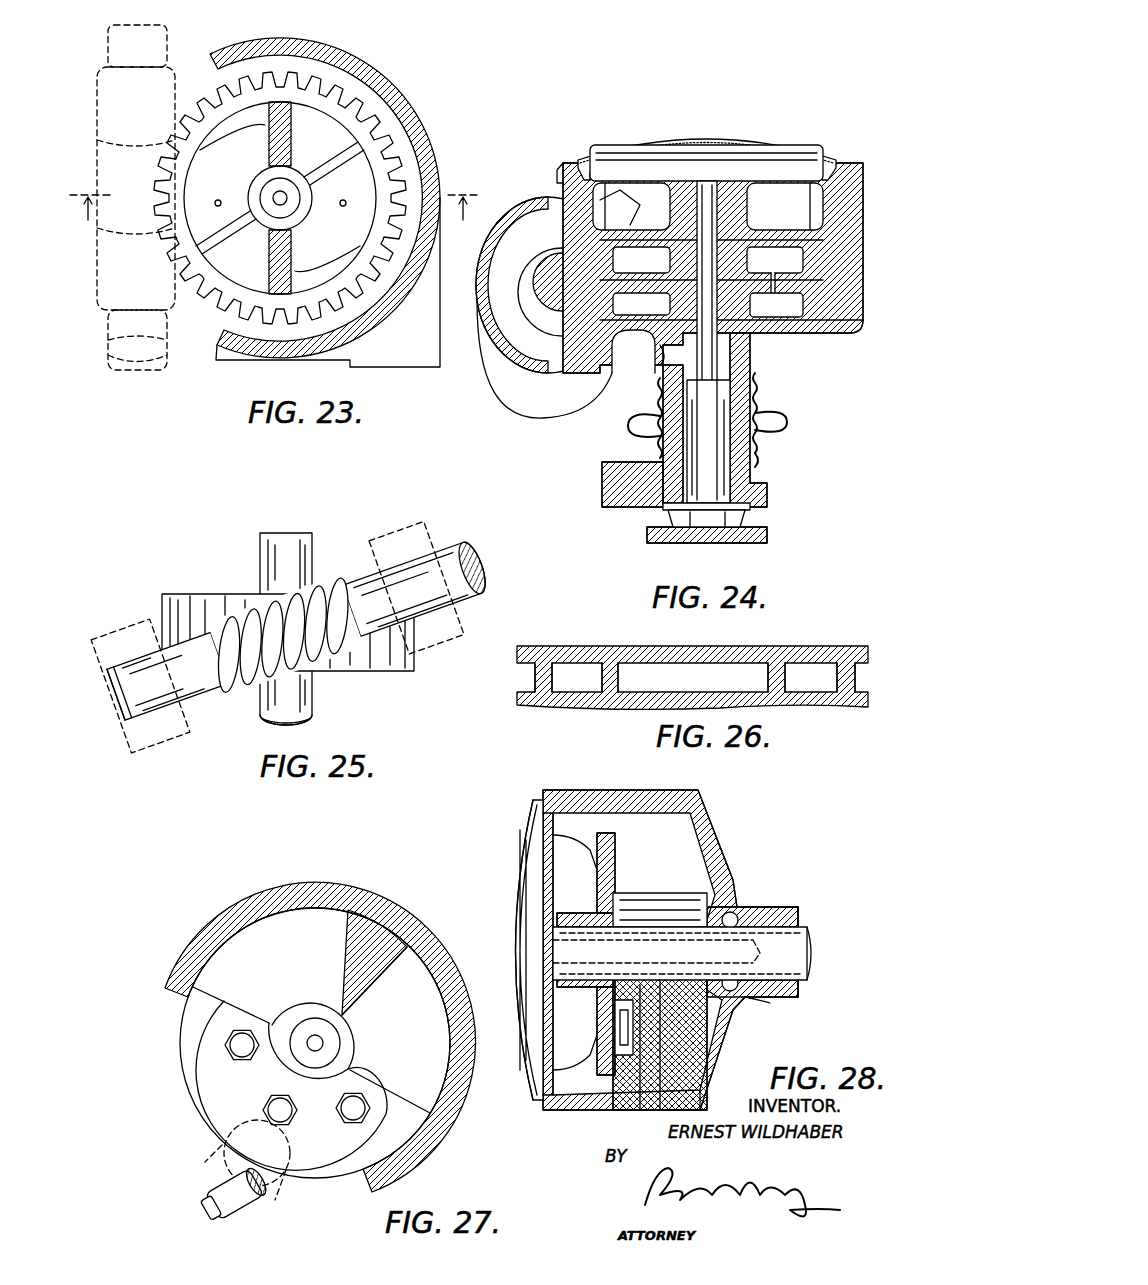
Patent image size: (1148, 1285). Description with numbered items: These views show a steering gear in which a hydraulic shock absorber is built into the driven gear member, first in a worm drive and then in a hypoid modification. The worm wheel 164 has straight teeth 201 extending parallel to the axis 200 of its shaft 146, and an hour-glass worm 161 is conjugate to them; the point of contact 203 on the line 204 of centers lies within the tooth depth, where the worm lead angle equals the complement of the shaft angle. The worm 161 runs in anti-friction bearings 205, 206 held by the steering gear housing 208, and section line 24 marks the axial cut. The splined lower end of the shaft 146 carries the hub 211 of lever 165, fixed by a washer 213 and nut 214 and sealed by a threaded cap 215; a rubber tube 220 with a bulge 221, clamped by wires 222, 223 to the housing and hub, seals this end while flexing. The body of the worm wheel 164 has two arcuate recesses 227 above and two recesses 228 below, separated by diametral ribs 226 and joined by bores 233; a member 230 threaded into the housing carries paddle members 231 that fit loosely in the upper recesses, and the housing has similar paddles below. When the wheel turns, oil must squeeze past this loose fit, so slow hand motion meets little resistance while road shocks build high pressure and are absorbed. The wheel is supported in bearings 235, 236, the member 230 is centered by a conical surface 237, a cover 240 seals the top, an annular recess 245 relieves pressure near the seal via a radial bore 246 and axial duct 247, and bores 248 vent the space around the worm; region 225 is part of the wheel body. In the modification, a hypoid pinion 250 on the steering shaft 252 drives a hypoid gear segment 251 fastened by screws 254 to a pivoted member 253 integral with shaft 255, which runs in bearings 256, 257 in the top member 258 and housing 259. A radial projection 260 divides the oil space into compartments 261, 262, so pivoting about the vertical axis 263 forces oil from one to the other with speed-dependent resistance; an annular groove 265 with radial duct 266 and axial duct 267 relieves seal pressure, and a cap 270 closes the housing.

In FIG. 23, the section line 24- 24 is at (275, 222).
In FIG. 23, the bearing pin shaft 146 is at (284, 190).
In FIG. 24, the bearing pin shaft 146 is at (722, 393).
In FIG. 23, the hour-glass worm 161 is at (112, 178).
In FIG. 24, the hour-glass worm 161 is at (545, 268).
In FIG. 25, the hour-glass worm 161 is at (367, 552).
In FIG. 23, the worm wheel 164 is at (368, 150).
In FIG. 24, the worm wheel 164 is at (795, 325).
In FIG. 25, the worm wheel 164 is at (210, 602).
In FIG. 24, the lever 165 is at (630, 493).
In FIG. 23, the axis 200 is at (278, 199).
In FIG. 23, the straight teeth 201 is at (380, 160).
In FIG. 25, the straight teeth 201 is at (367, 677).
In FIG. 24, the point of contact 203 is at (587, 277).
In FIG. 24, the line of centers 204 is at (641, 260).
In FIG. 25, the anti-friction bearing 205 is at (127, 623).
In FIG. 25, the anti-friction bearing 206 is at (415, 521).
In FIG. 24, the steering gear housing 208 is at (838, 332).
In FIG. 24, the hub 211 is at (745, 487).
In FIG. 24, the washer 213 is at (742, 515).
In FIG. 24, the nut 214 is at (690, 520).
In FIG. 24, the threaded cap 215 is at (760, 540).
In FIG. 24, the tube 220 is at (760, 453).
In FIG. 24, the bulge 221 is at (788, 422).
In FIG. 24, the wire 222 is at (758, 407).
In FIG. 24, the wire 223 is at (655, 432).
In FIG. 24, the recess 225 is at (677, 302).
In FIG. 23, the diametral ribs 226 is at (210, 243).
In FIG. 26, the diametral ribs 226 is at (537, 678).
In FIG. 23, the arcuate recesses 227 is at (280, 197).
In FIG. 24, the arcuate recesses 227 is at (652, 215).
In FIG. 24, the arcuate recesses 228 is at (772, 312).
In FIG. 24, the member 230 is at (590, 206).
In FIG. 26, the member 230 is at (810, 655).
In FIG. 23, the paddle members 231 is at (272, 130).
In FIG. 26, the paddle members 231 is at (617, 684).
In FIG. 23, the bores 233 is at (220, 201).
In FIG. 24, the bores 233 is at (775, 270).
In FIG. 24, the bearing 235 is at (668, 398).
In FIG. 24, the bearing 236 is at (679, 190).
In FIG. 24, the conical surface 237 is at (560, 178).
In FIG. 24, the cover 240 is at (765, 143).
In FIG. 24, the annular recess 245 is at (672, 362).
In FIG. 24, the radial bore 246 is at (668, 352).
In FIG. 24, the axial duct 247 is at (714, 217).
In FIG. 24, the bores 248 is at (622, 250).
In FIG. 27, the hypoid pinion 250 is at (225, 1163).
In FIG. 27, the hypoid gear segment 251 is at (330, 1167).
In FIG. 28, the hypoid gear segment 251 is at (683, 1053).
In FIG. 27, the steering shaft 252 is at (267, 1207).
In FIG. 27, the pivoted member 253 is at (405, 1019).
In FIG. 28, the pivoted member 253 is at (637, 1080).
In FIG. 27, the screws 254 is at (357, 1103).
In FIG. 28, the screws 254 is at (620, 1027).
In FIG. 28, the shaft 255 is at (793, 960).
In FIG. 28, the bearing 256 is at (572, 913).
In FIG. 28, the bearing 257 is at (782, 907).
In FIG. 28, the top member 258 is at (613, 880).
In FIG. 27, the housing 259 is at (402, 926).
In FIG. 28, the housing 259 is at (727, 855).
In FIG. 27, the radial projection 260 is at (365, 980).
In FIG. 27, the compartment 261 is at (304, 924).
In FIG. 27, the compartment 262 is at (430, 1003).
In FIG. 27, the vertical axis 263 is at (313, 1036).
In FIG. 28, the annular groove 265 is at (735, 985).
In FIG. 28, the radial duct 266 is at (770, 1003).
In FIG. 28, the axial duct 267 is at (682, 940).
In FIG. 28, the cap 270 is at (507, 913).